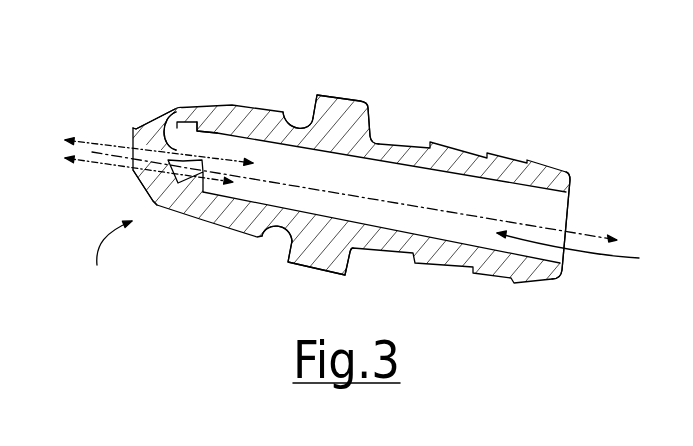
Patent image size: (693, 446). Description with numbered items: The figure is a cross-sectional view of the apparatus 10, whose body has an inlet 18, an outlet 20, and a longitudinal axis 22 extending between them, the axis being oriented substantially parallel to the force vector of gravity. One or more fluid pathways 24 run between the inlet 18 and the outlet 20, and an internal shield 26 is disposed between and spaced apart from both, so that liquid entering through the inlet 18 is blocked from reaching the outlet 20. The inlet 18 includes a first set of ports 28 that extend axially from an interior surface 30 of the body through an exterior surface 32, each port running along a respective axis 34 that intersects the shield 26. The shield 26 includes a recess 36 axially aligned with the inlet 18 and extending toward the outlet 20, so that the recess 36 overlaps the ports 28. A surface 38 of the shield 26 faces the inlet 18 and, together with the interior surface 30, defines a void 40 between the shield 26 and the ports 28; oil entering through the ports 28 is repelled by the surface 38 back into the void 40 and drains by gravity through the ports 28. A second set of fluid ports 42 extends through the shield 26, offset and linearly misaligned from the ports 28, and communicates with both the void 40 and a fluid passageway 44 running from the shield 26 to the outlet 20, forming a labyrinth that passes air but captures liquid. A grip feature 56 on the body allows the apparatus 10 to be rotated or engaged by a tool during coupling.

The apparatus 10 is at (410, 100).
The inlet 18 is at (108, 255).
The outlet 20 is at (577, 213).
The longitudinal axis 22 is at (598, 237).
The fluid pathway 24 is at (583, 250).
The internal shield 26 is at (183, 147).
The ports 28 is at (130, 143).
The interior surface 30 is at (170, 186).
The exterior surface 32 is at (133, 143).
The axis 34 is at (243, 163).
The recess 36 is at (158, 145).
The surface 38 is at (177, 148).
The void 40 is at (156, 147).
The fluid ports 42 is at (183, 187).
The fluid passageway 44 is at (517, 197).
The grip feature 56 is at (342, 113).